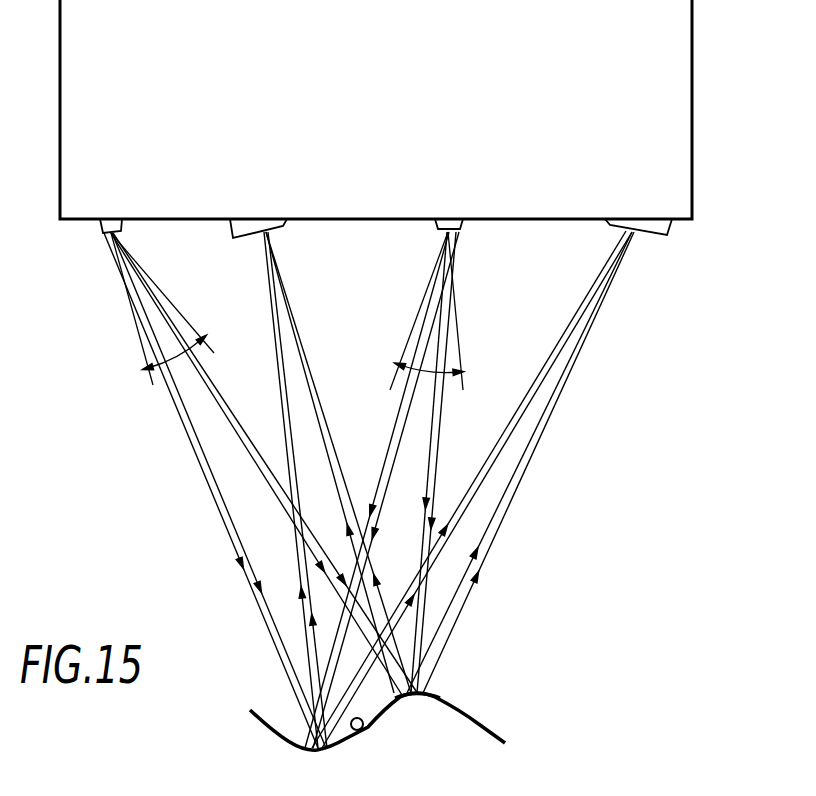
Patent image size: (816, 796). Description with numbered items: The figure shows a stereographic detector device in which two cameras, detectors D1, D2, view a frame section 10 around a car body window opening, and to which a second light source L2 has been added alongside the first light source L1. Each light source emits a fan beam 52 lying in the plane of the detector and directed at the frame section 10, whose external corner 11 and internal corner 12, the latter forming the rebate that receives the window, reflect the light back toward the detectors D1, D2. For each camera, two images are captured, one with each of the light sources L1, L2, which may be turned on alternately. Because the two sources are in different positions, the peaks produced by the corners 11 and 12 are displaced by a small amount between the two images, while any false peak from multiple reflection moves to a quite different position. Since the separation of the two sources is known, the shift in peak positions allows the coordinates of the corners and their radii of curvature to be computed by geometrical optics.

The frame section 10 is at (500, 714).
The external corner 11 is at (443, 693).
The internal corner 12 is at (368, 725).
The fan beam 52 is at (165, 350).
The light source L1 is at (457, 206).
The second light source L2 is at (111, 208).
The detector D1 is at (258, 211).
The detector D2 is at (638, 209).